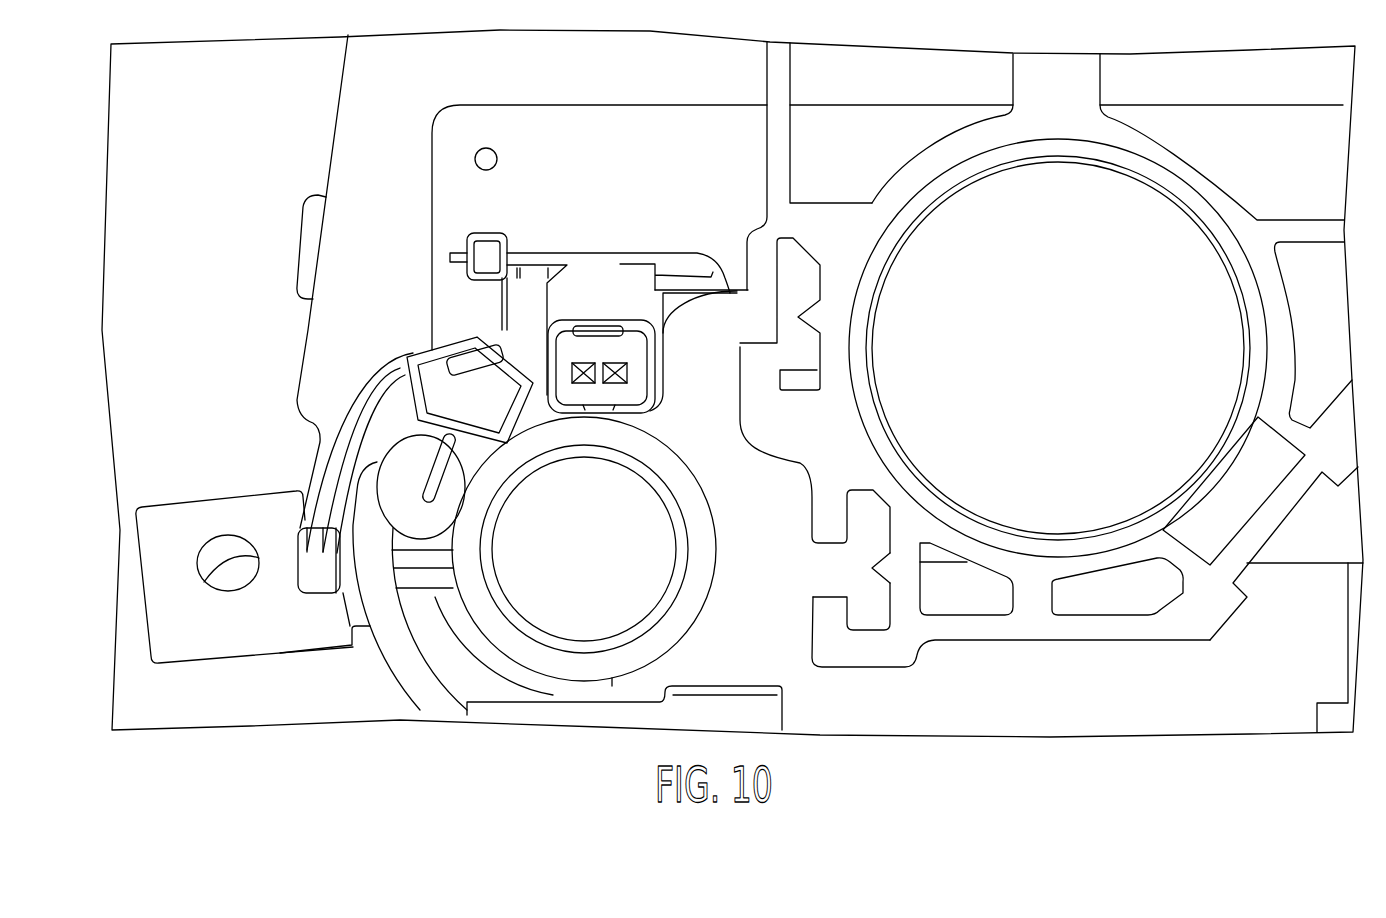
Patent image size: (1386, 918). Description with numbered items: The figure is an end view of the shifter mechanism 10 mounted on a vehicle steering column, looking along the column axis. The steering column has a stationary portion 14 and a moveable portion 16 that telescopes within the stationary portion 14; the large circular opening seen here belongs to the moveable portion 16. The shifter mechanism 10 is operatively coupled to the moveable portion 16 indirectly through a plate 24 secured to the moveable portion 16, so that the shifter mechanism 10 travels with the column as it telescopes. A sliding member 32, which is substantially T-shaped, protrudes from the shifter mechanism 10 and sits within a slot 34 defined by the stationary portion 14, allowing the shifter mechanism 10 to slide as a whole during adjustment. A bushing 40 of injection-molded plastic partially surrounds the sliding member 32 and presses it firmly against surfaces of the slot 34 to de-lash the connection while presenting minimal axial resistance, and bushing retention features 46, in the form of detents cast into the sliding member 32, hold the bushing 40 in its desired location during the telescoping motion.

The shifter mechanism 10 is at (490, 712).
The stationary portion 14 is at (938, 163).
The moveable portion 16 is at (1080, 152).
The plate 24 is at (568, 120).
The sliding member 32 is at (880, 612).
The slot 34 is at (786, 244).
The bushing 40 is at (857, 632).
The bushing retention features 46 is at (876, 570).